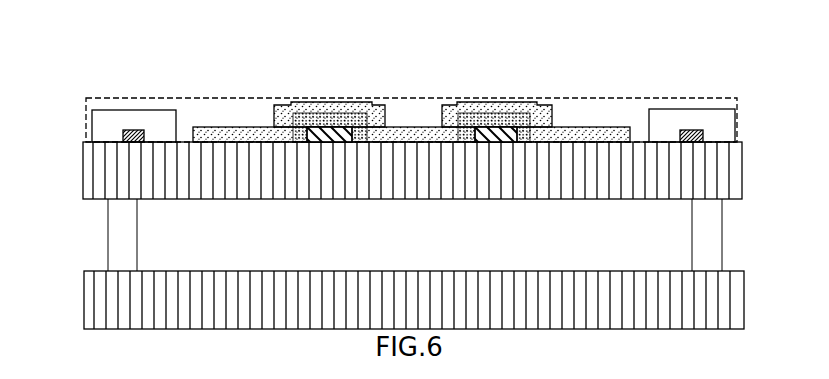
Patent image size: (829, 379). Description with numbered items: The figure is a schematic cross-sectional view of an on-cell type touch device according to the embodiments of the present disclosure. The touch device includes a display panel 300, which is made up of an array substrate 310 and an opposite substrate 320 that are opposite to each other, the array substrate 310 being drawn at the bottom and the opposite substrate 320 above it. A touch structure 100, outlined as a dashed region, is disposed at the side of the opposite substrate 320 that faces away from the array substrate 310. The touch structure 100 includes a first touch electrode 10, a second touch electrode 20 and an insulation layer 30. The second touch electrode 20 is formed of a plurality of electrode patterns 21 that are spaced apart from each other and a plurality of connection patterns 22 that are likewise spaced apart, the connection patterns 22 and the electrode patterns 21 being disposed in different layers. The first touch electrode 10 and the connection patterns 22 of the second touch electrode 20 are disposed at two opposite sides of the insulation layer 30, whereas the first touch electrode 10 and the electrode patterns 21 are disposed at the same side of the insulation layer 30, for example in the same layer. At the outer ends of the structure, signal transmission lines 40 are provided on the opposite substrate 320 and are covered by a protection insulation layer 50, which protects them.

The first touch electrode 10 is at (322, 127).
The second touch electrode 20 is at (411, 98).
The electrode patterns 21 is at (407, 132).
The connection patterns 22 is at (447, 73).
The insulation layer 30 is at (292, 111).
The signal transmission lines 40 is at (123, 135).
The protection insulation layer 50 is at (110, 117).
The touch structure 100 is at (712, 98).
The display panel 300 is at (411, 235).
The array substrate 310 is at (117, 298).
The opposite substrate 320 is at (117, 168).